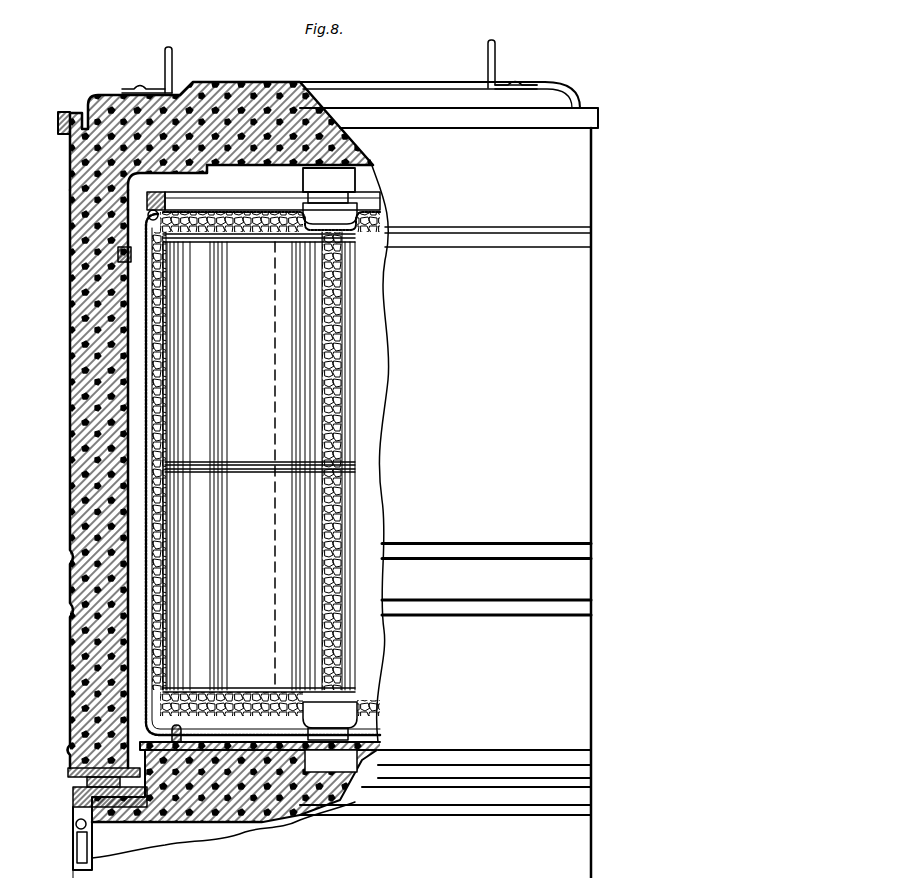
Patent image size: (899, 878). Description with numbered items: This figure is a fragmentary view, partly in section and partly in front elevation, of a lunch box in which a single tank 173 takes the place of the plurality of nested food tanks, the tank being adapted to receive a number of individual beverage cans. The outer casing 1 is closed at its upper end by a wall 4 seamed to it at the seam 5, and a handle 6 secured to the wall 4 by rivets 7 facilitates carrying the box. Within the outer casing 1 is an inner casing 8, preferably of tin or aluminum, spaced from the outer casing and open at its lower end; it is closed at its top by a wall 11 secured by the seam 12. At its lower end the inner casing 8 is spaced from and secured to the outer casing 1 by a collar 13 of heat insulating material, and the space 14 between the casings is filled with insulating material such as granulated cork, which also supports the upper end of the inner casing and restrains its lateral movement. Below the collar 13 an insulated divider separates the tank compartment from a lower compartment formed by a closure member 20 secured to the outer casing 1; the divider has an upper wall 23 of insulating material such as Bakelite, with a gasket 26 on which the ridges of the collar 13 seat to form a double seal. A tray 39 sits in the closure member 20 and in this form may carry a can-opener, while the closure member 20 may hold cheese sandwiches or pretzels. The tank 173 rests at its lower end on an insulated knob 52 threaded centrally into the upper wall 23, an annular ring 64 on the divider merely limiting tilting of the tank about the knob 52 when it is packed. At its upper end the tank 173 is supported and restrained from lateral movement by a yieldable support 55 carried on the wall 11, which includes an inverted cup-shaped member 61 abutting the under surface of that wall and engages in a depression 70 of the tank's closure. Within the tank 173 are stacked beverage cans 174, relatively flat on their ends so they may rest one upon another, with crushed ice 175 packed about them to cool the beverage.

The outer casing 1 is at (70, 383).
The wall 4 is at (229, 82).
The seam 5 is at (57, 118).
The handle 6 is at (173, 50).
The rivets 7 is at (142, 83).
The inner casing 8 is at (133, 393).
The wall 11 is at (192, 179).
The seam 12 is at (133, 253).
The collar 13 is at (70, 750).
The space 14 is at (72, 482).
The closure member 20 is at (64, 862).
The upper wall 23 is at (254, 747).
The gasket 26 is at (123, 823).
The tray 39 is at (93, 858).
The knob 52 is at (318, 700).
The yieldable support 55 is at (362, 186).
The inverted cup-shaped member 61 is at (249, 209).
The annular ring 64 is at (183, 737).
The depression 70 is at (300, 207).
The single tank 173 is at (161, 425).
The cans 174 is at (313, 305).
The crushed ice 175 is at (157, 333).